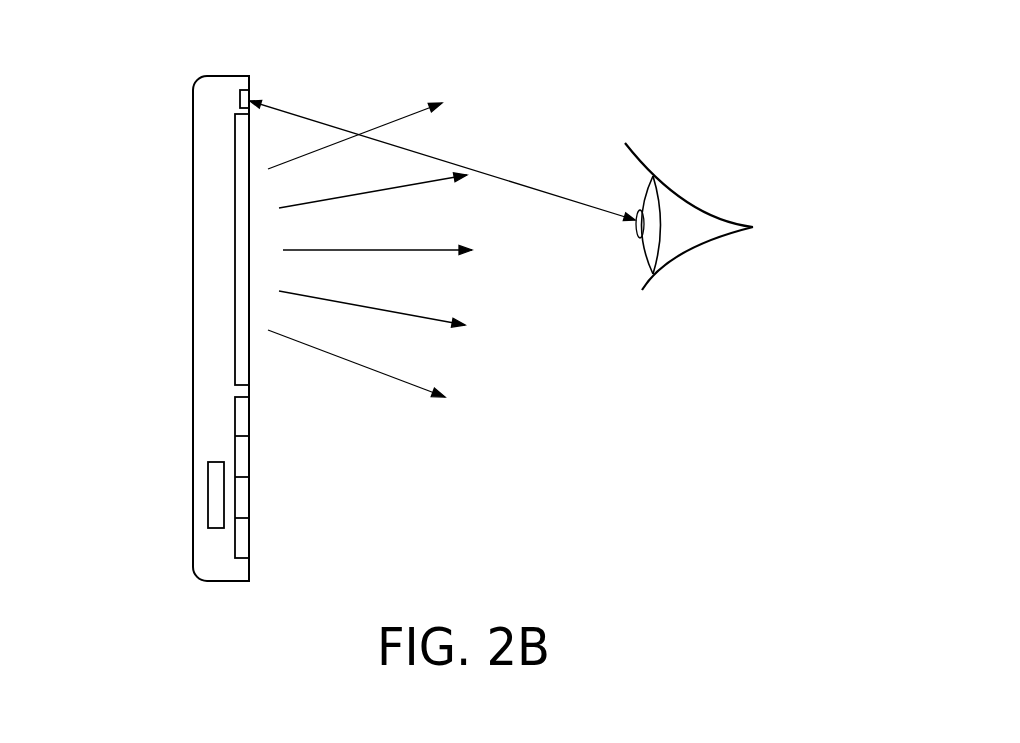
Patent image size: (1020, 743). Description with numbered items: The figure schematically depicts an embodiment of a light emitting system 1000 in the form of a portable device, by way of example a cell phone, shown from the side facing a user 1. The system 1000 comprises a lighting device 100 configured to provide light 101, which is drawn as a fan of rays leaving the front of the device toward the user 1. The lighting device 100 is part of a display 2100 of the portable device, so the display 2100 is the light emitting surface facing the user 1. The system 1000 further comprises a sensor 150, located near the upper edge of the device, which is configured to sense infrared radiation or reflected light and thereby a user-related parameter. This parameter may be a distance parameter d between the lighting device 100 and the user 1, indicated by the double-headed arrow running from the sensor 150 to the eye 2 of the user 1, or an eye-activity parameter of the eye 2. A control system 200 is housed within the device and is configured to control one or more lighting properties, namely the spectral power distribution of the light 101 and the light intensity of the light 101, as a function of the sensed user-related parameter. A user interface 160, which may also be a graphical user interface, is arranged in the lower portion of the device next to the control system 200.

The light emitting system 1000 is at (157, 73).
The display 2100 is at (227, 195).
The lighting device 100 is at (242, 265).
The sensor 150 is at (250, 99).
The user interface 160 is at (246, 497).
The control system 200 is at (215, 503).
The light 101 is at (413, 317).
The distance parameter d is at (442, 160).
The user 1 is at (770, 130).
The eye 2 is at (623, 177).